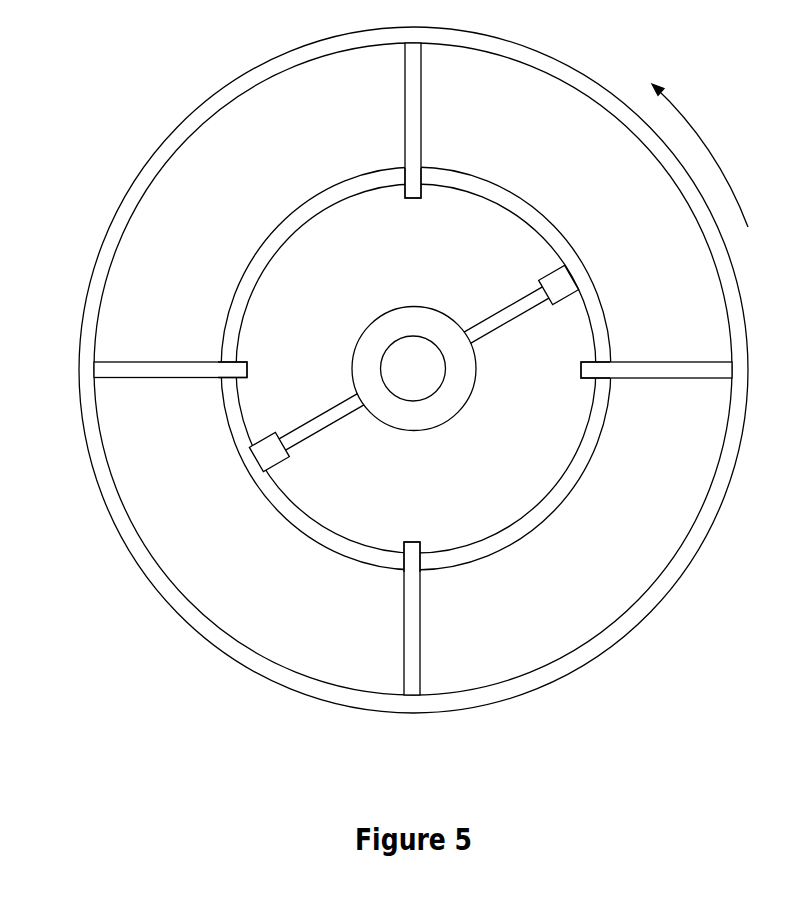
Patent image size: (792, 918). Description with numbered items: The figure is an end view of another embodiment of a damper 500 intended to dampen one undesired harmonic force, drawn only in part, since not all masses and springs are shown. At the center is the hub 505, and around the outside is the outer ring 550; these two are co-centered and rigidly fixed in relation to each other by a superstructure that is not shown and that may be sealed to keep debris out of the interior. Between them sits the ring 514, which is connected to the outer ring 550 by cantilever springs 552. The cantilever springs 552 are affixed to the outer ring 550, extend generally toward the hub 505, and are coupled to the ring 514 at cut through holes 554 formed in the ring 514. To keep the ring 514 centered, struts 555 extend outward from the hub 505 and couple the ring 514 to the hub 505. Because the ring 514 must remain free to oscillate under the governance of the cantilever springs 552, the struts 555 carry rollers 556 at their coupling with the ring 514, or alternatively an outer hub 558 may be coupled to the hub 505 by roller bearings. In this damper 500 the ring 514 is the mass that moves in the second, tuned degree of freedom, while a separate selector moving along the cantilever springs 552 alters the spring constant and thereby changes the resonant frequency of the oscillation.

The damper 500 is at (413, 407).
The hub 505 is at (413, 368).
The ring 514 is at (438, 168).
The outer ring 550 is at (142, 540).
The cantilever springs 552 is at (423, 118).
The cut through holes 554 is at (415, 172).
The struts 555 is at (527, 328).
The rollers 556 is at (552, 274).
The outer hub 558 is at (410, 307).